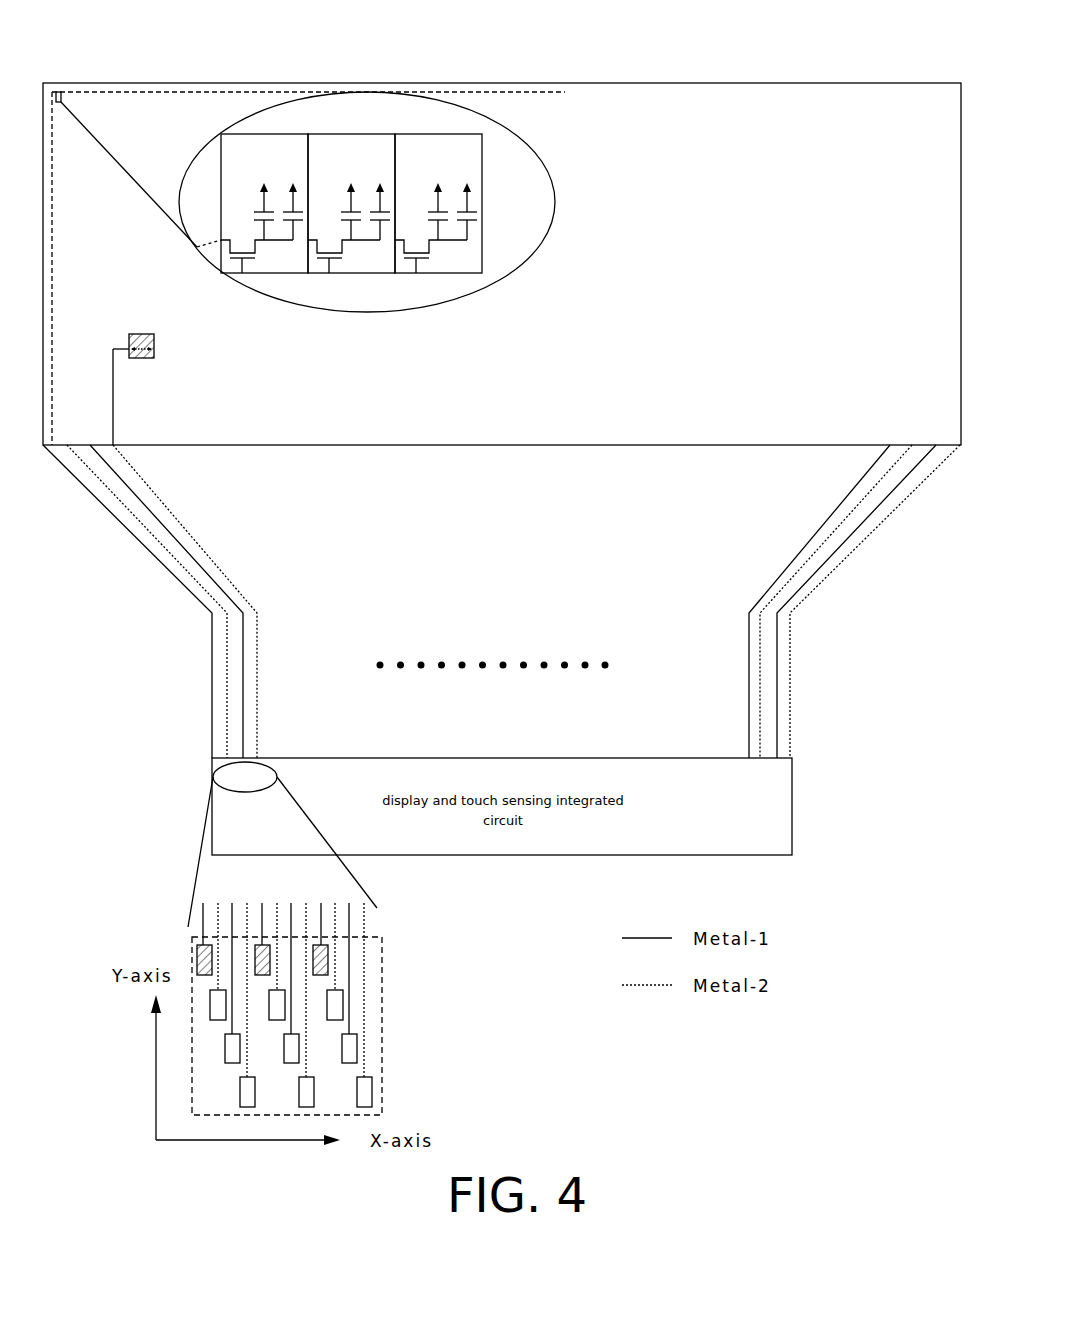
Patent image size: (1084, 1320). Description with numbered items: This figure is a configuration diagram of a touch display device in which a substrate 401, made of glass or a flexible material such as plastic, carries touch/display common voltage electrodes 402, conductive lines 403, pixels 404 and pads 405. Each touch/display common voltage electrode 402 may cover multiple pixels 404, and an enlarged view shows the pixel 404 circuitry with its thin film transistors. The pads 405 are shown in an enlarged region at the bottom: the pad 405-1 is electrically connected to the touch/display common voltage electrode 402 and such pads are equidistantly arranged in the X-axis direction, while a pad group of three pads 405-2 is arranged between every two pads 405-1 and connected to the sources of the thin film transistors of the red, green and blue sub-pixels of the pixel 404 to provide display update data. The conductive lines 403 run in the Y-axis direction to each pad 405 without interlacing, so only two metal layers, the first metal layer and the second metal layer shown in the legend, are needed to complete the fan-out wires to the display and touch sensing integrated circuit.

The substrate 401 is at (563, 83).
The touch/display common voltage electrode 402 is at (137, 334).
The conductive line 403 is at (52, 420).
The pixel 404 is at (270, 143).
The pad 405 is at (341, 1009).
The pad electrically connected to the touch/display common voltage electrode 405-1 is at (328, 958).
The pad electrically connected to the sub-pixel 405-2 is at (372, 1088).